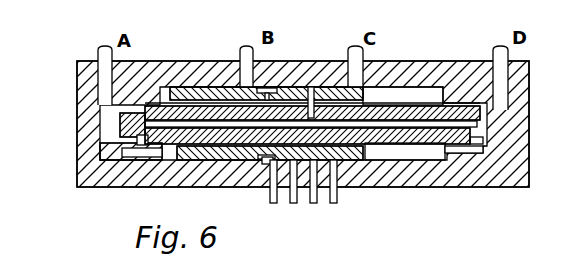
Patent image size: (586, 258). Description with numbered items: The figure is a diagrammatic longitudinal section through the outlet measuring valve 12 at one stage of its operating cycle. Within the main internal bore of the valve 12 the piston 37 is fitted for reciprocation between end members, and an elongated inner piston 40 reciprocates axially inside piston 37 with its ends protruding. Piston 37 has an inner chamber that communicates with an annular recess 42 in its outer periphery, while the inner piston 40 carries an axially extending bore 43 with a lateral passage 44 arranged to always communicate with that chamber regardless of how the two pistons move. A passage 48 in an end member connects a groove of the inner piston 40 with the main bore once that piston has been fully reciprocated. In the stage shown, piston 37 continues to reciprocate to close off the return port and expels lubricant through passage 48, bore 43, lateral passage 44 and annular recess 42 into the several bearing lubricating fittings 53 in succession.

The outlet measuring valve 12 is at (77, 130).
The piston 37 is at (188, 88).
The elongated inner piston 40 is at (413, 60).
The annular recess 42 is at (267, 165).
The axially extending bore 43 is at (425, 127).
The lateral passage 44 is at (313, 113).
The passage 48 is at (458, 154).
The outlets 53 is at (333, 203).